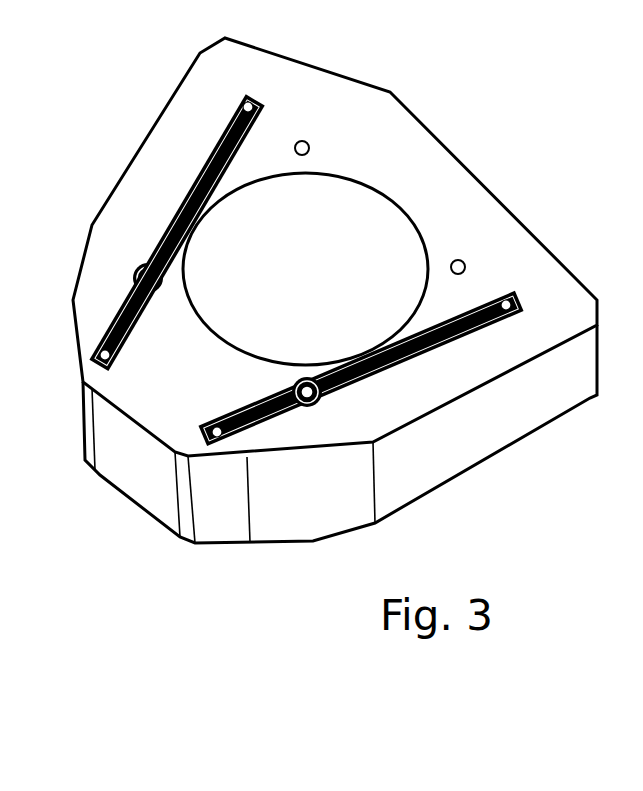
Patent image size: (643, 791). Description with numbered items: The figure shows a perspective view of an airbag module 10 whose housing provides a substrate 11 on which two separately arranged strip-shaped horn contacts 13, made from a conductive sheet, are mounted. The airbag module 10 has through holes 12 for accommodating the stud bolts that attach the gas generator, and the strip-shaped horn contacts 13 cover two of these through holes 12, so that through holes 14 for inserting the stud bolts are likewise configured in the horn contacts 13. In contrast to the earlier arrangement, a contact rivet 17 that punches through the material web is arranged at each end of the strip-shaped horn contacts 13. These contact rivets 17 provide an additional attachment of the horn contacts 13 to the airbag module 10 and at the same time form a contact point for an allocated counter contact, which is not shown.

The airbag module 10 is at (534, 418).
The substrate 11 is at (498, 187).
The through hole 12 is at (464, 264).
The horn contact 13 is at (430, 348).
The through hole 14 is at (318, 399).
The contact rivet 17 is at (521, 305).